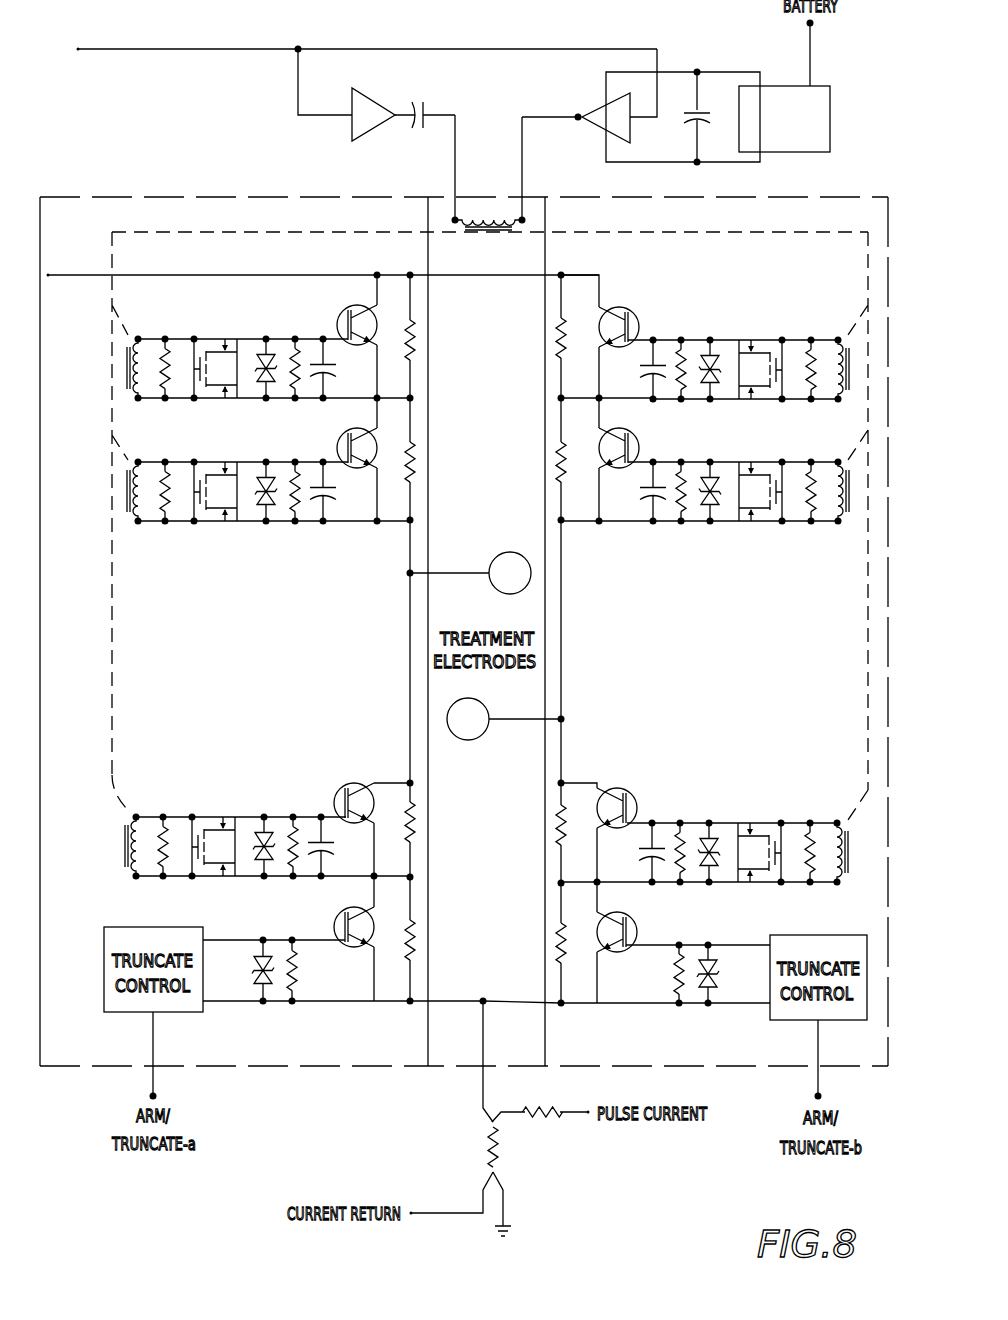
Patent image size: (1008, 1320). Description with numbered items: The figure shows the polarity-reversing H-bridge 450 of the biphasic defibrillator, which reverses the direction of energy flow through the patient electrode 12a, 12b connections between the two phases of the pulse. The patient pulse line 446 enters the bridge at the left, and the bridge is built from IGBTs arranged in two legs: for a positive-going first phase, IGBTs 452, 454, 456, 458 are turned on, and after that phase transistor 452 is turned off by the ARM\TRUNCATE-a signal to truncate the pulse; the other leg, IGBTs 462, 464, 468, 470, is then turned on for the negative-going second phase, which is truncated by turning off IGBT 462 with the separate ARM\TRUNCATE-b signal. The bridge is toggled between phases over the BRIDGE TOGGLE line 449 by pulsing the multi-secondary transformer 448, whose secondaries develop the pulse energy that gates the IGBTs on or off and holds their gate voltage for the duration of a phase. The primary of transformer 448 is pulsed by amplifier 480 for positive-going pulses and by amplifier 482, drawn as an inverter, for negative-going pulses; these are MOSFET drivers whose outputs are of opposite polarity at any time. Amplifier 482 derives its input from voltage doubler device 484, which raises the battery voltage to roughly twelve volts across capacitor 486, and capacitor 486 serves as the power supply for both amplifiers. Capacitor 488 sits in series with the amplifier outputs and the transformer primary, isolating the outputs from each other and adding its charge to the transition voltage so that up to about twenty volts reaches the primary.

The patient electrode 12a is at (506, 553).
The patient electrode 12b is at (466, 741).
The patient pulse line 446 is at (75, 278).
The multi-secondary transformer 448 is at (482, 233).
The BRIDGE TOGGLE line 449 is at (166, 58).
The H-bridge 450 is at (228, 200).
The IGBT 452 is at (337, 915).
The IGBT 454 is at (341, 787).
The IGBT 456 is at (637, 312).
The IGBT 458 is at (637, 436).
The IGBT 462 is at (635, 920).
The IGBT 464 is at (635, 793).
The IGBT 468 is at (340, 432).
The IGBT 470 is at (343, 307).
The amplifier 480 is at (385, 128).
The amplifier 482 is at (600, 108).
The voltage doubler device 484 is at (815, 153).
The capacitor 486 is at (706, 100).
The capacitor 488 is at (430, 106).